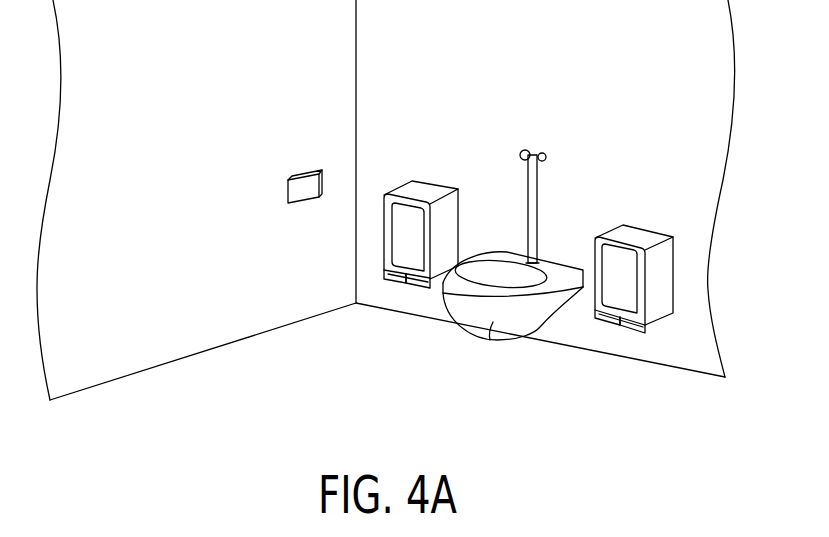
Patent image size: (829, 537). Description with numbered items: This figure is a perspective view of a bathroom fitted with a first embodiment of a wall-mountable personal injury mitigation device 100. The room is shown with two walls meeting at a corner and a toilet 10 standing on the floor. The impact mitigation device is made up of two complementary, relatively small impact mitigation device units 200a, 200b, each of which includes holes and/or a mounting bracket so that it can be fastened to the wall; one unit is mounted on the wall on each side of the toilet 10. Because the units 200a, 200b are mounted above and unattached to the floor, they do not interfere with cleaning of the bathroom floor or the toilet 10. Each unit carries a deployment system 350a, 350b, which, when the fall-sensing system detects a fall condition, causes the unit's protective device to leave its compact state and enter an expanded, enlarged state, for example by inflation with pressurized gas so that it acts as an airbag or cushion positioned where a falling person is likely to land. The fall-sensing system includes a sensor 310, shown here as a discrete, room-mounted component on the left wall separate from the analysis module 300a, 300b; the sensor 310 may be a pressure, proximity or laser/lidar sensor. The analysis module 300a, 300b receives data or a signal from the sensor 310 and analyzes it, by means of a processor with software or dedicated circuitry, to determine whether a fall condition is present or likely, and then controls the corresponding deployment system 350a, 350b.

The toilet 10 is at (493, 322).
The wall-mountable personal injury mitigation device 100 is at (582, 160).
The impact mitigation device unit 200a is at (423, 190).
The impact mitigation device unit 200b is at (637, 235).
The analysis module 300a is at (392, 282).
The analysis module 300b is at (605, 315).
The deployment system 350a is at (422, 282).
The deployment system 350b is at (632, 322).
The sensor 310 is at (300, 176).